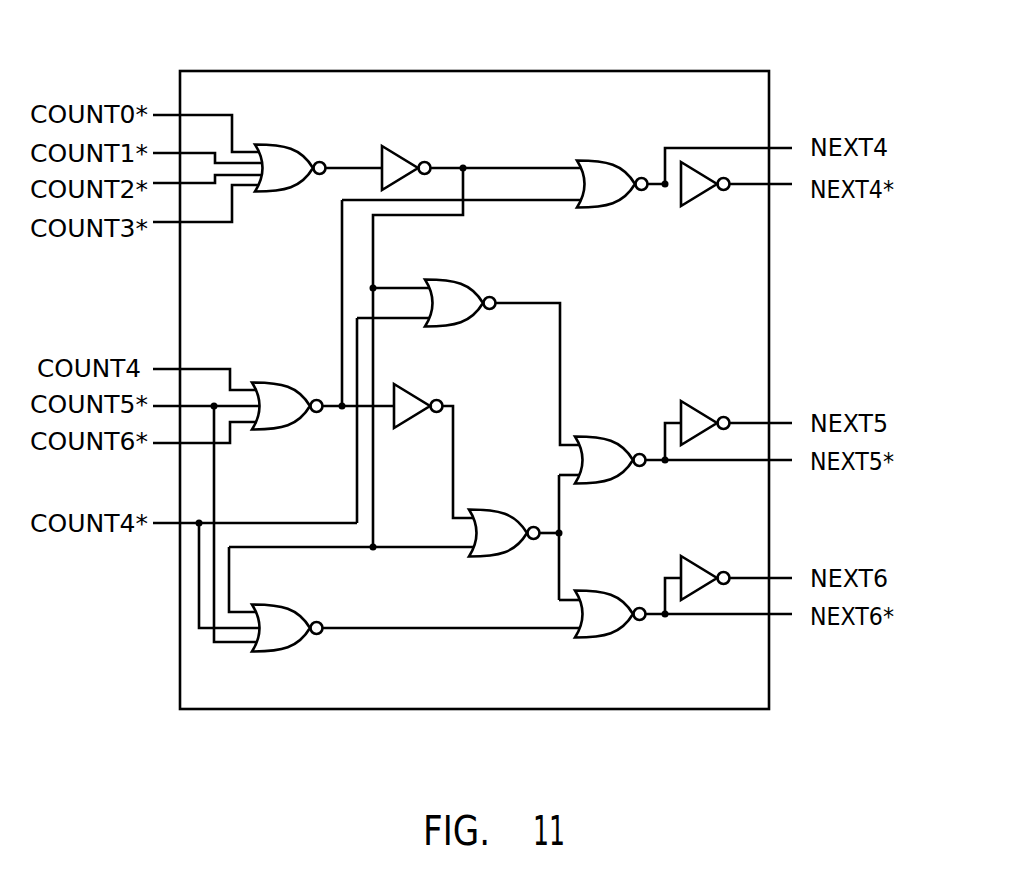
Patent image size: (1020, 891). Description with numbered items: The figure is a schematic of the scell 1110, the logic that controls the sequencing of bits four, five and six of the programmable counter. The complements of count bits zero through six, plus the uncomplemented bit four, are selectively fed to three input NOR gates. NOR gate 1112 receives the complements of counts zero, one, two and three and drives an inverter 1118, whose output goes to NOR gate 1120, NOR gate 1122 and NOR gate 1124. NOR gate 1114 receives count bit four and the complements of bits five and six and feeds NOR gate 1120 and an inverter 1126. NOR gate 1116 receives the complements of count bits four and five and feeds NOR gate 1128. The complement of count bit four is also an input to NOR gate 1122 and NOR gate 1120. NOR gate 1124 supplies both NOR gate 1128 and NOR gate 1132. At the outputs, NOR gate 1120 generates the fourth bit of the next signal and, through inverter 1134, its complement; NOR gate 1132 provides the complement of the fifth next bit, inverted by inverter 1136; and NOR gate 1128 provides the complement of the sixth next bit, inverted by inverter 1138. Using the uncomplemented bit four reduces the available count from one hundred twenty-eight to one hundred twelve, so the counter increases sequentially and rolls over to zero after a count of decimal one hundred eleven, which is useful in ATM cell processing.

The scell 1110 is at (661, 68).
The NOR gate 1112 is at (270, 144).
The NOR gate 1114 is at (267, 382).
The NOR gate 1116 is at (280, 652).
The inverter 1118 is at (407, 159).
The NOR gate 1120 is at (594, 161).
The NOR gate 1122 is at (440, 281).
The NOR gate 1124 is at (492, 508).
The inverter 1126 is at (419, 397).
The NOR gate 1128 is at (600, 591).
The NOR gate 1132 is at (600, 436).
The inverter 1134 is at (702, 201).
The inverter 1136 is at (702, 413).
The inverter 1138 is at (702, 569).